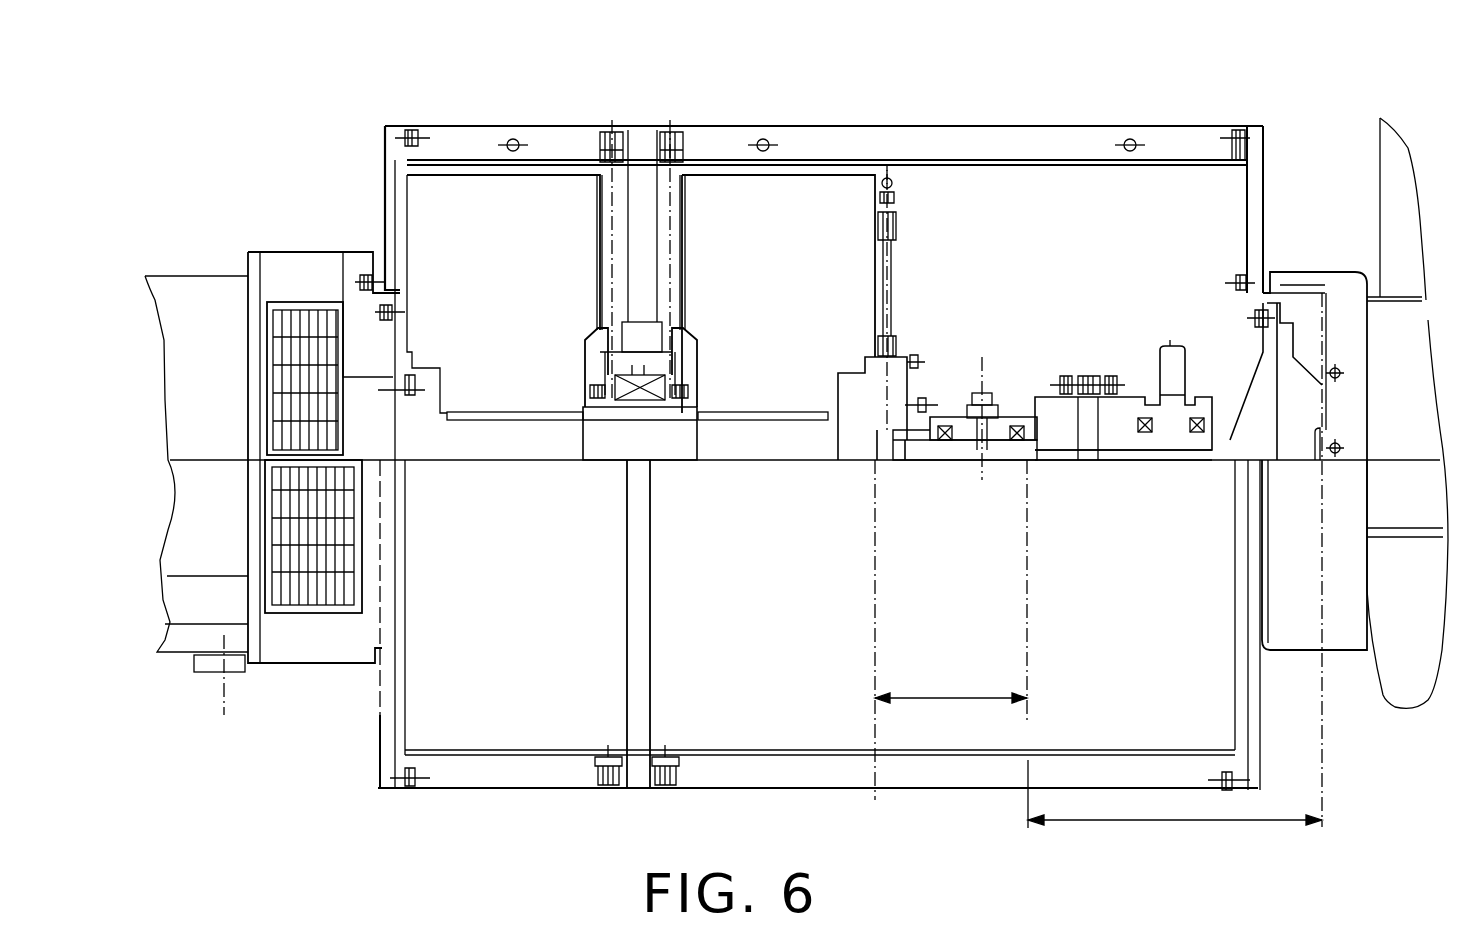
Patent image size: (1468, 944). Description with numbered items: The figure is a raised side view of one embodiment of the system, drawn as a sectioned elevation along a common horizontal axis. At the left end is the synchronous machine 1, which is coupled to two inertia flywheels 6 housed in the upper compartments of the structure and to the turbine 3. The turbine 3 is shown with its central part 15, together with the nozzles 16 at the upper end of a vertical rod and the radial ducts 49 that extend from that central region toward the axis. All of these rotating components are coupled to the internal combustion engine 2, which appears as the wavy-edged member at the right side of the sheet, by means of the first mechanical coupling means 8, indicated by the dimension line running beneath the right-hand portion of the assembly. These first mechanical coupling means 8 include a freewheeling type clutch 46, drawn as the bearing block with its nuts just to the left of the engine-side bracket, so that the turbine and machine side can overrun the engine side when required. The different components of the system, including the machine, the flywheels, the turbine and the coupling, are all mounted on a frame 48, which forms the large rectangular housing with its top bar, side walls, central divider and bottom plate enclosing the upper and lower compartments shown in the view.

The synchronous machine 1 is at (205, 292).
The internal combustion engine 2 is at (1410, 682).
The turbine 3 is at (951, 630).
The inertia flywheels 6 is at (568, 197).
The first mechanical coupling means 8 is at (1175, 816).
The central part 15 is at (948, 437).
The nozzles 16 is at (883, 172).
The freewheeling type clutch 46 is at (1153, 450).
The frame 48 is at (700, 623).
The radial ducts 49 is at (892, 277).